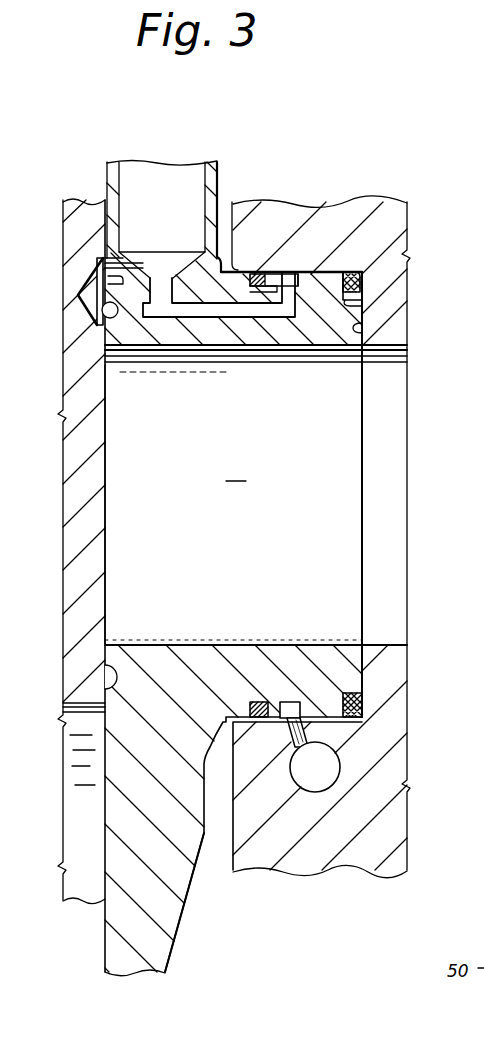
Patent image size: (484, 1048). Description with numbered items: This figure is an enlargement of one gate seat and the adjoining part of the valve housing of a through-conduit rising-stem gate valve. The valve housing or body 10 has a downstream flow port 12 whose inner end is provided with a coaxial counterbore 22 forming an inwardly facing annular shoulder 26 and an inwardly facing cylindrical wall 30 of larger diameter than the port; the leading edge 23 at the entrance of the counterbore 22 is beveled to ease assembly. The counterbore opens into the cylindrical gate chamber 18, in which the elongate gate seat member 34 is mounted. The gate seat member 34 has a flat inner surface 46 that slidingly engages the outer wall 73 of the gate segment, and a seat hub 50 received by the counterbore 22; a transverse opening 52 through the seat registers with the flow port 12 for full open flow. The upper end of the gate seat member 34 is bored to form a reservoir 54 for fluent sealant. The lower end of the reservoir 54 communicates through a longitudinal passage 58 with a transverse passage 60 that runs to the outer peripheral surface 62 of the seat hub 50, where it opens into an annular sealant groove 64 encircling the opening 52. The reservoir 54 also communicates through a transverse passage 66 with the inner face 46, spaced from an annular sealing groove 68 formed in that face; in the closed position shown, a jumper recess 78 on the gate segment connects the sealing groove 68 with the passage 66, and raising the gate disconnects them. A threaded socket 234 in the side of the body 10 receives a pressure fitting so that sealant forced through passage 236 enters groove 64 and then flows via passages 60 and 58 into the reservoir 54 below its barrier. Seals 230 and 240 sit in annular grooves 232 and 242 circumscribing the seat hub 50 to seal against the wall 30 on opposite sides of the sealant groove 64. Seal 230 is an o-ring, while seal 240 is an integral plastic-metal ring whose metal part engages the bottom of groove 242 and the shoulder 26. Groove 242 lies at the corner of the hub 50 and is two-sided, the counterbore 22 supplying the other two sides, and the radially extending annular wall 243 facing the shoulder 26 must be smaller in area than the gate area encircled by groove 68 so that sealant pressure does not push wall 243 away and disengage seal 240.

The valve housing 10 is at (338, 852).
The flow port 12 is at (238, 471).
The gate chamber 18 is at (233, 268).
The counterbore 22 is at (360, 313).
The leading edge 23 is at (229, 264).
The annular shoulder 26 is at (357, 330).
The cylindrical wall 30 is at (312, 275).
The gate seat member 34 is at (186, 918).
The inner surface 46 is at (105, 180).
The seat hub 50 is at (350, 667).
The transverse opening 52 is at (327, 644).
The reservoir 54 is at (160, 170).
The longitudinal passage 58 is at (162, 287).
The transverse passage 60 is at (193, 312).
The outer peripheral surface 62 is at (327, 271).
The annular sealant groove 64 is at (297, 272).
The transverse passage 66 is at (97, 265).
The annular sealing groove 68 is at (108, 317).
The outer wall 73 is at (105, 508).
The jumper recess 78 is at (78, 295).
The seal 230 is at (253, 273).
The annular groove 232 is at (255, 288).
The threaded socket 234 is at (327, 763).
The passage 236 is at (302, 735).
The seal 240 is at (357, 271).
The annular groove 242 is at (350, 303).
The end face 243 is at (336, 285).